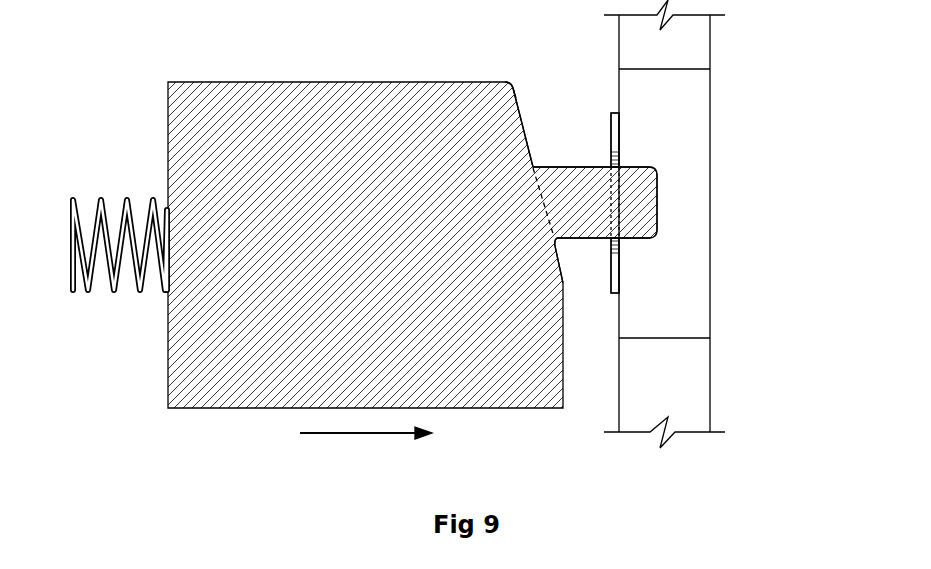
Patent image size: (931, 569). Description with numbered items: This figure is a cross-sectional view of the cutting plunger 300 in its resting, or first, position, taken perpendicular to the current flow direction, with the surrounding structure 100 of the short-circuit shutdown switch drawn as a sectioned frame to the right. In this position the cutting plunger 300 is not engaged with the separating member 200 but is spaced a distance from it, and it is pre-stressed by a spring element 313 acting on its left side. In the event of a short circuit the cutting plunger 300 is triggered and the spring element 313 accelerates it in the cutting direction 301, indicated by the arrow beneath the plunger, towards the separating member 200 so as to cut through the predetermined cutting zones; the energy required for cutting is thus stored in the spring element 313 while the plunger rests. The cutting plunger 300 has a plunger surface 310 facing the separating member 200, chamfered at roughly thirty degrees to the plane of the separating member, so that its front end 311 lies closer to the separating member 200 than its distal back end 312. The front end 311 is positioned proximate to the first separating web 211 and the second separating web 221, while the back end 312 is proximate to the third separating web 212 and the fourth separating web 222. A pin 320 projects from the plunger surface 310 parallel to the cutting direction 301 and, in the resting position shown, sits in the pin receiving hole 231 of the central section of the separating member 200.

The housing 100 is at (697, 384).
The separating member 200 is at (619, 287).
The first separating web 211 is at (619, 252).
The third separating web 212 is at (617, 155).
The second separating web 221 is at (615, 265).
The fourth separating web 222 is at (615, 140).
The pin receiving hole 231 is at (619, 242).
The cutting plunger 300 is at (283, 87).
The cutting direction 301 is at (365, 435).
The plunger surface 310 is at (517, 120).
The front end 311 is at (565, 282).
The back end 312 is at (517, 83).
The spring element 313 is at (118, 208).
The pin 320 is at (578, 185).